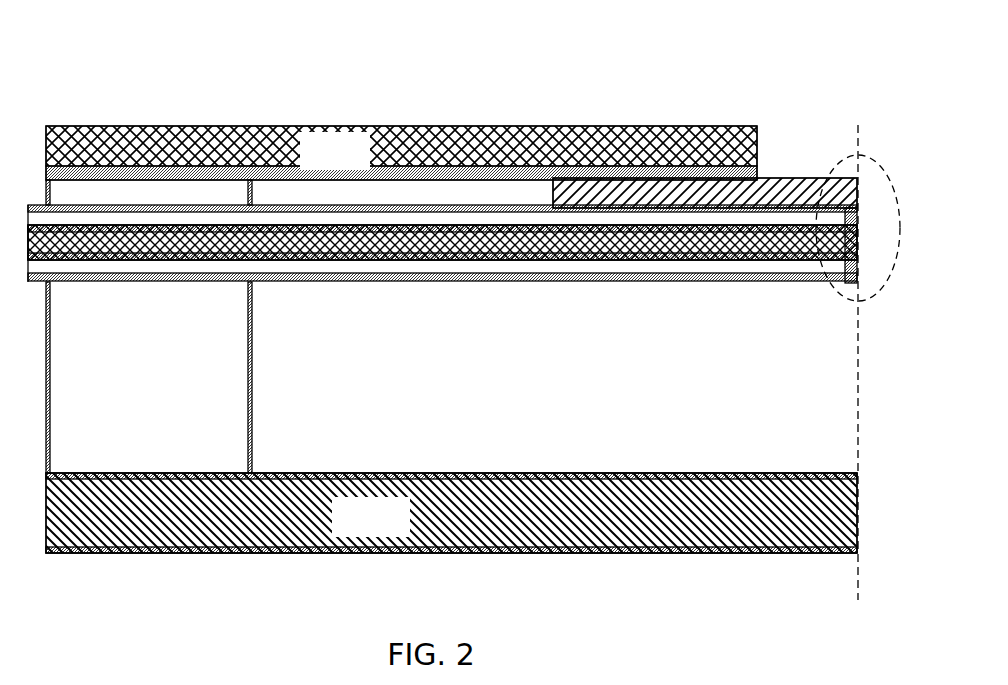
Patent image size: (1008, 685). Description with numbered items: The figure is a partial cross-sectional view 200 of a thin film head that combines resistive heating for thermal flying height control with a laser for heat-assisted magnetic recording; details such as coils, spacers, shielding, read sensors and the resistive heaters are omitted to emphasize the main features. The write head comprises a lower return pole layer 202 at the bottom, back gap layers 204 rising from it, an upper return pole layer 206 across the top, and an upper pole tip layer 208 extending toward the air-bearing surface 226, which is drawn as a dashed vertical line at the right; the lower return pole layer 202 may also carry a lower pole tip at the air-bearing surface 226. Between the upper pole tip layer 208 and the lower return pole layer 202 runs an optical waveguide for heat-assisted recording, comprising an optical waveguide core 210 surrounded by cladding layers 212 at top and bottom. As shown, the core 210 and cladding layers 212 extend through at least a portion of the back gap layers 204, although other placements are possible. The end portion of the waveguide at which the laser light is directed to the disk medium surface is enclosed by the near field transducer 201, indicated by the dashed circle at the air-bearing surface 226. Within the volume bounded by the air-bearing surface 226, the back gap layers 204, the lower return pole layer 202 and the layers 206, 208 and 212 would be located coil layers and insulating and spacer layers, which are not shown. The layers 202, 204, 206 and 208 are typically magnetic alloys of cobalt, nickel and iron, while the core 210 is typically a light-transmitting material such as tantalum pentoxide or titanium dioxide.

The partial cross-sectional view 200 is at (296, 64).
The near field transducer 201 is at (842, 156).
The lower return pole layer 202 is at (451, 513).
The back gap layers 204 is at (139, 192).
The upper return pole layer 206 is at (401, 153).
The upper pole tip layer 208 is at (633, 190).
The optical waveguide core 210 is at (287, 242).
The cladding layers 212 is at (405, 270).
The air-bearing surface 226 is at (855, 590).